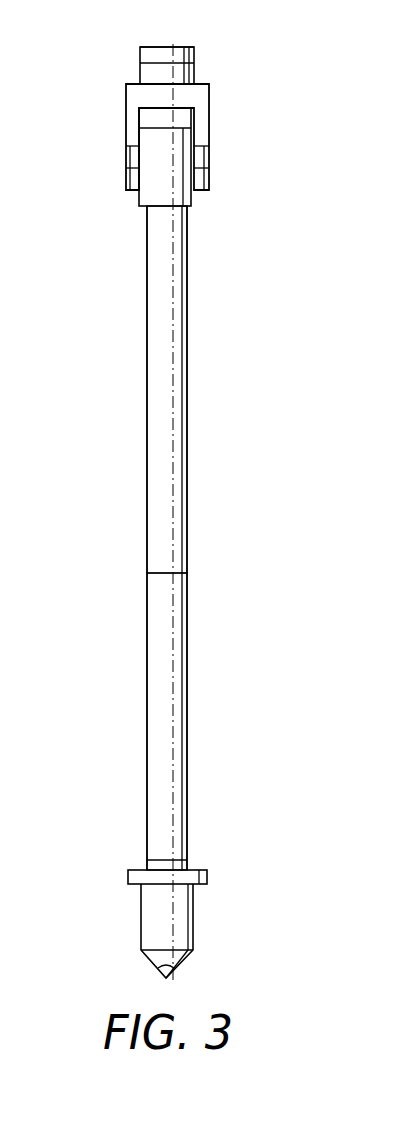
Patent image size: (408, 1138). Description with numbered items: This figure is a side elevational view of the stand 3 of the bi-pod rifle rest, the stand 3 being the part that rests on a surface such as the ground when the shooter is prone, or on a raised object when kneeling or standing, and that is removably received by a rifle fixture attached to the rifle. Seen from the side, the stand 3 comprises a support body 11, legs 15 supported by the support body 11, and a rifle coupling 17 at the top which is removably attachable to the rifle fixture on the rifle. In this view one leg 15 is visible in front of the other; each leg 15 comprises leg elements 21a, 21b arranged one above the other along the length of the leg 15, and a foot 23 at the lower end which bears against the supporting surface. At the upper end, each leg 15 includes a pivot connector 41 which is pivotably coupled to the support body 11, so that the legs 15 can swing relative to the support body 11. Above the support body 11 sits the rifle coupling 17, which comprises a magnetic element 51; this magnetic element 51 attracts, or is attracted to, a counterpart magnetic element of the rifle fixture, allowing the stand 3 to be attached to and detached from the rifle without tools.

The stand 3 is at (228, 301).
The support body 11 is at (219, 94).
The leg 15 is at (117, 523).
The rifle coupling 17 is at (211, 55).
The leg element 21a is at (155, 385).
The leg element 21b is at (155, 724).
The foot 23 is at (129, 922).
The pivot connector 41 is at (153, 157).
The magnetic element 51 is at (150, 57).